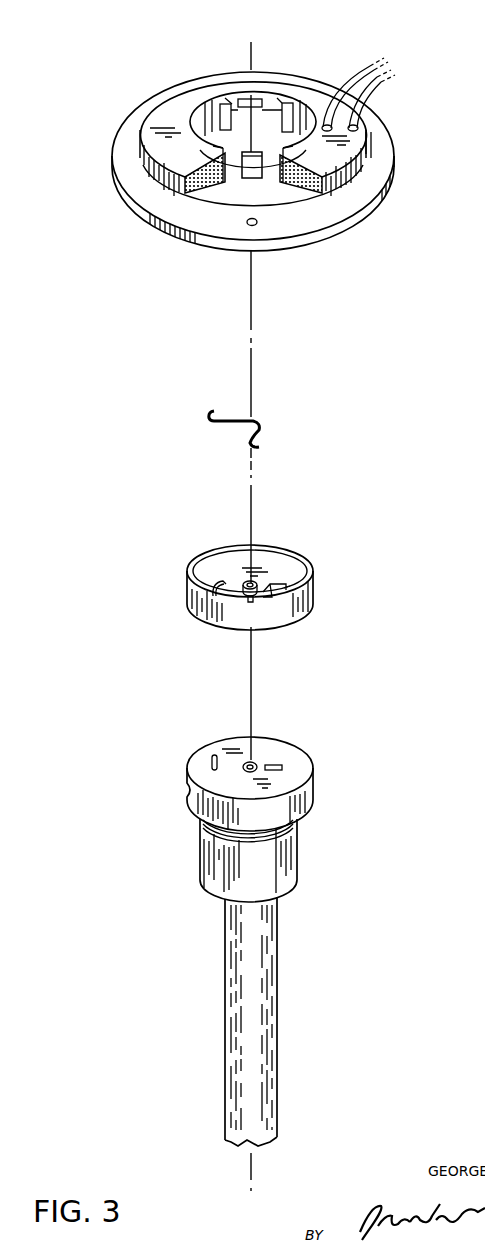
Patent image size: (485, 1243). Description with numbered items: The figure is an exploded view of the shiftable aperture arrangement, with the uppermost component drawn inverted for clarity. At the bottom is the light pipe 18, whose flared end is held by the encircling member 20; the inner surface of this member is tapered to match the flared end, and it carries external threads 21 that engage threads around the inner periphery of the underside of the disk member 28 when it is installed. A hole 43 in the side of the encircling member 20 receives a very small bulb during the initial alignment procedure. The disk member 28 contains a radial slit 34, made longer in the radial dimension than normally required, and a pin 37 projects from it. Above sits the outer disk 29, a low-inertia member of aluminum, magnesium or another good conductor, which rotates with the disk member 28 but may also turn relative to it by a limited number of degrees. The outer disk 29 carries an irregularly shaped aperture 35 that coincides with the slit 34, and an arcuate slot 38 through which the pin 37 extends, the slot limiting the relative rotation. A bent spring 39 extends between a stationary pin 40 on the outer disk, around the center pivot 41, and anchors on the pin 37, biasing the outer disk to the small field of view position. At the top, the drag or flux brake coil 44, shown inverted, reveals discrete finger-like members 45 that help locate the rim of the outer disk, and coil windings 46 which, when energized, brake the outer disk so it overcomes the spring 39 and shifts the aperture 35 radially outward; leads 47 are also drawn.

The light pipe 18 is at (230, 927).
The encircling member 20 is at (282, 888).
The external threads 21 is at (207, 835).
The disk member 28 is at (313, 789).
The outer disk 29 is at (190, 590).
The radial slit 34 is at (282, 765).
The aperture 35 is at (313, 598).
The pin 37 is at (210, 760).
The slot 38 is at (218, 582).
The spring 39 is at (260, 425).
The stationary pin 40 is at (250, 601).
The center pivot 41 is at (257, 580).
The hole 43 is at (188, 789).
The drag or flux brake coil 44 is at (343, 226).
The finger-like members 45 is at (292, 108).
The coil windings 46 is at (217, 187).
The wires 47 is at (388, 68).